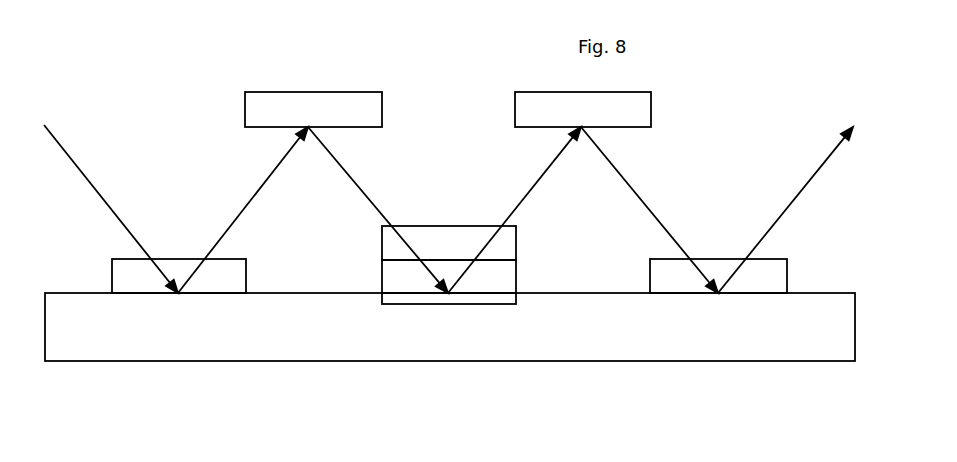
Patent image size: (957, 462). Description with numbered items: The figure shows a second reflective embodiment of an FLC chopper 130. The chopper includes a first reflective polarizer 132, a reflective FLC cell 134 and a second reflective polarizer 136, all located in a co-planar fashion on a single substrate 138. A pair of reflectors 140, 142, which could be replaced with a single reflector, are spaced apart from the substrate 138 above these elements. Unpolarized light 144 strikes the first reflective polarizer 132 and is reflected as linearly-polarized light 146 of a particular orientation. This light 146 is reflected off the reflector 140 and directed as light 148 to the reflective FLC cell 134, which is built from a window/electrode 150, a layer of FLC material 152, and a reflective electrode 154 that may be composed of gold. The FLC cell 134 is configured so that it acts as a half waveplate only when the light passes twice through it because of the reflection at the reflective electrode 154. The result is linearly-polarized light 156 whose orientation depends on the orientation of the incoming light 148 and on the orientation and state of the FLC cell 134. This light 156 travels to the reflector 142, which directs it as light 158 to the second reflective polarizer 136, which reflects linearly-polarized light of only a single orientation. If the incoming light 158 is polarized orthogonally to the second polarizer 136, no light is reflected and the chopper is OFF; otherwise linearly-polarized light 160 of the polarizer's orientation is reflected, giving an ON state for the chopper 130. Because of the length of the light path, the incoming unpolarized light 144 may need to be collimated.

The FLC chopper 130 is at (460, 183).
The first reflective polarizer 132 is at (137, 277).
The reflective FLC cell 134 is at (445, 259).
The second reflective polarizer 136 is at (775, 277).
The substrate 138 is at (661, 338).
The reflector 140 is at (333, 107).
The reflector 142 is at (628, 104).
The unpolarized light 144 is at (102, 193).
The linearly-polarized light 146 is at (250, 200).
The light 148 is at (356, 177).
The window/electrode 150 is at (505, 243).
The layer of FLC material 152 is at (503, 277).
The reflective electrode 154 is at (503, 298).
The linearly-polarized light 156 is at (520, 198).
The light 158 is at (645, 199).
The linearly-polarized light 160 is at (795, 203).